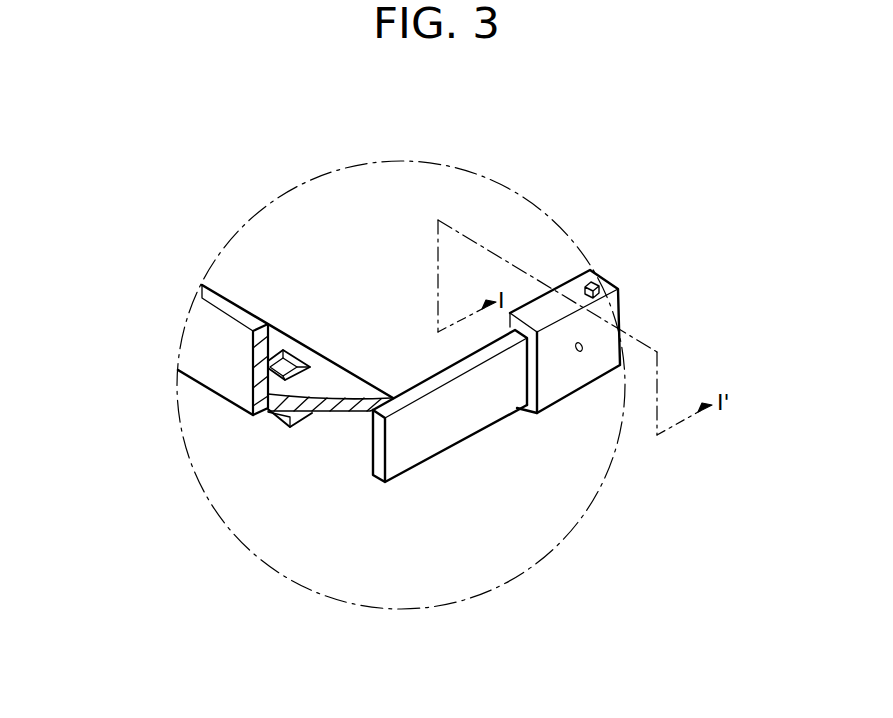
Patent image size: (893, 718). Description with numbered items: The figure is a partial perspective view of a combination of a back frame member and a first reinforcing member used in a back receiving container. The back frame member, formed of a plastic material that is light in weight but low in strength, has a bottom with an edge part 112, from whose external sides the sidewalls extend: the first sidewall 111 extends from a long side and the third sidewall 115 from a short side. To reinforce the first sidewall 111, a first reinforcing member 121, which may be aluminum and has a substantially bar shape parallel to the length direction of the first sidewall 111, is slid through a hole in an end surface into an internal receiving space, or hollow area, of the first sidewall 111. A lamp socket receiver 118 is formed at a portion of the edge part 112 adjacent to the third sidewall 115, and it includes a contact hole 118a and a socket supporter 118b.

The first sidewall 111 is at (568, 380).
The edge part 112 is at (330, 366).
The third sidewall 115 is at (196, 354).
The lamp socket receiver 118 is at (77, 418).
The contact hole 118a is at (283, 372).
The socket supporter 118b is at (276, 421).
The first reinforcing member 121 is at (374, 460).